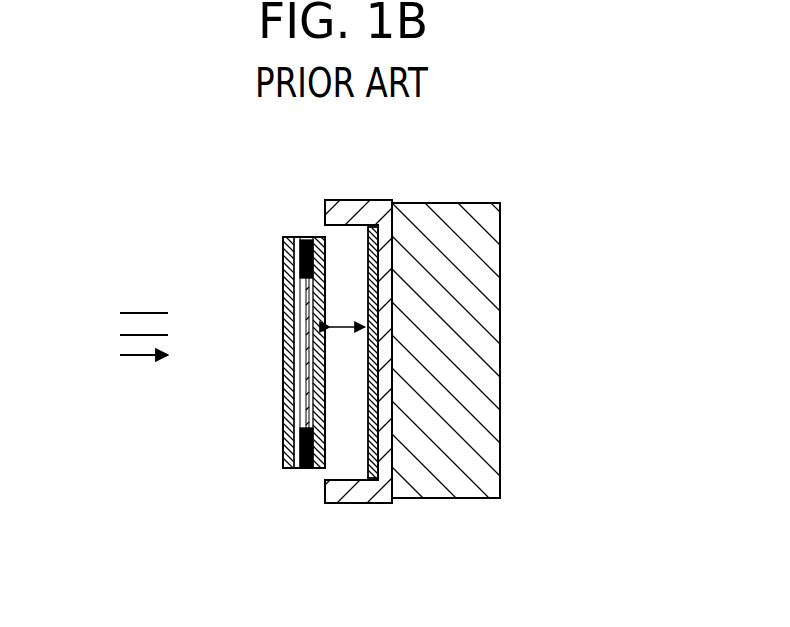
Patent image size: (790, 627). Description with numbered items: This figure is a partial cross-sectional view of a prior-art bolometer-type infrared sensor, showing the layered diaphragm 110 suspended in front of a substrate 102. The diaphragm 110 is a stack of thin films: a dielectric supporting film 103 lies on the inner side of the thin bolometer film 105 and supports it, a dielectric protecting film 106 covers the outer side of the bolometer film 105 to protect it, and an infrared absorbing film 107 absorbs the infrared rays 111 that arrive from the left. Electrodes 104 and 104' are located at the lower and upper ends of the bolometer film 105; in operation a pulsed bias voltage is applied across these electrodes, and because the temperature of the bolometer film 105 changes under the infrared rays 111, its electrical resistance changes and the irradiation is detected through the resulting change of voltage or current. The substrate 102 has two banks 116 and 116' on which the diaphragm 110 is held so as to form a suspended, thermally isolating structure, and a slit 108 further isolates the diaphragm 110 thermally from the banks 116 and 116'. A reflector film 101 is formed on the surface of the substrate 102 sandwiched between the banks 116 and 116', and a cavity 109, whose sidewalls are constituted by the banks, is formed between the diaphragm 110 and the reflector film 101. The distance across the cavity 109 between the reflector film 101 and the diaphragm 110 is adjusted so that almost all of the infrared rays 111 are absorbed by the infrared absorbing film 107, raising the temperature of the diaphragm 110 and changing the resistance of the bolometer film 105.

The reflector film 101 is at (371, 230).
The substrate 102 is at (452, 482).
The dielectric supporting film 103 is at (321, 246).
The electrode 104 is at (245, 476).
The electrode 104' is at (265, 195).
The thin bolometer film 105 is at (298, 342).
The dielectric protecting film 106 is at (290, 312).
The infrared absorbing film 107 is at (308, 432).
The slit 108 is at (321, 474).
The cavity 109 is at (354, 303).
The diaphragm 110 is at (270, 273).
The infrared rays 111 is at (142, 358).
The bank 116 is at (412, 327).
The bank 116' is at (362, 543).